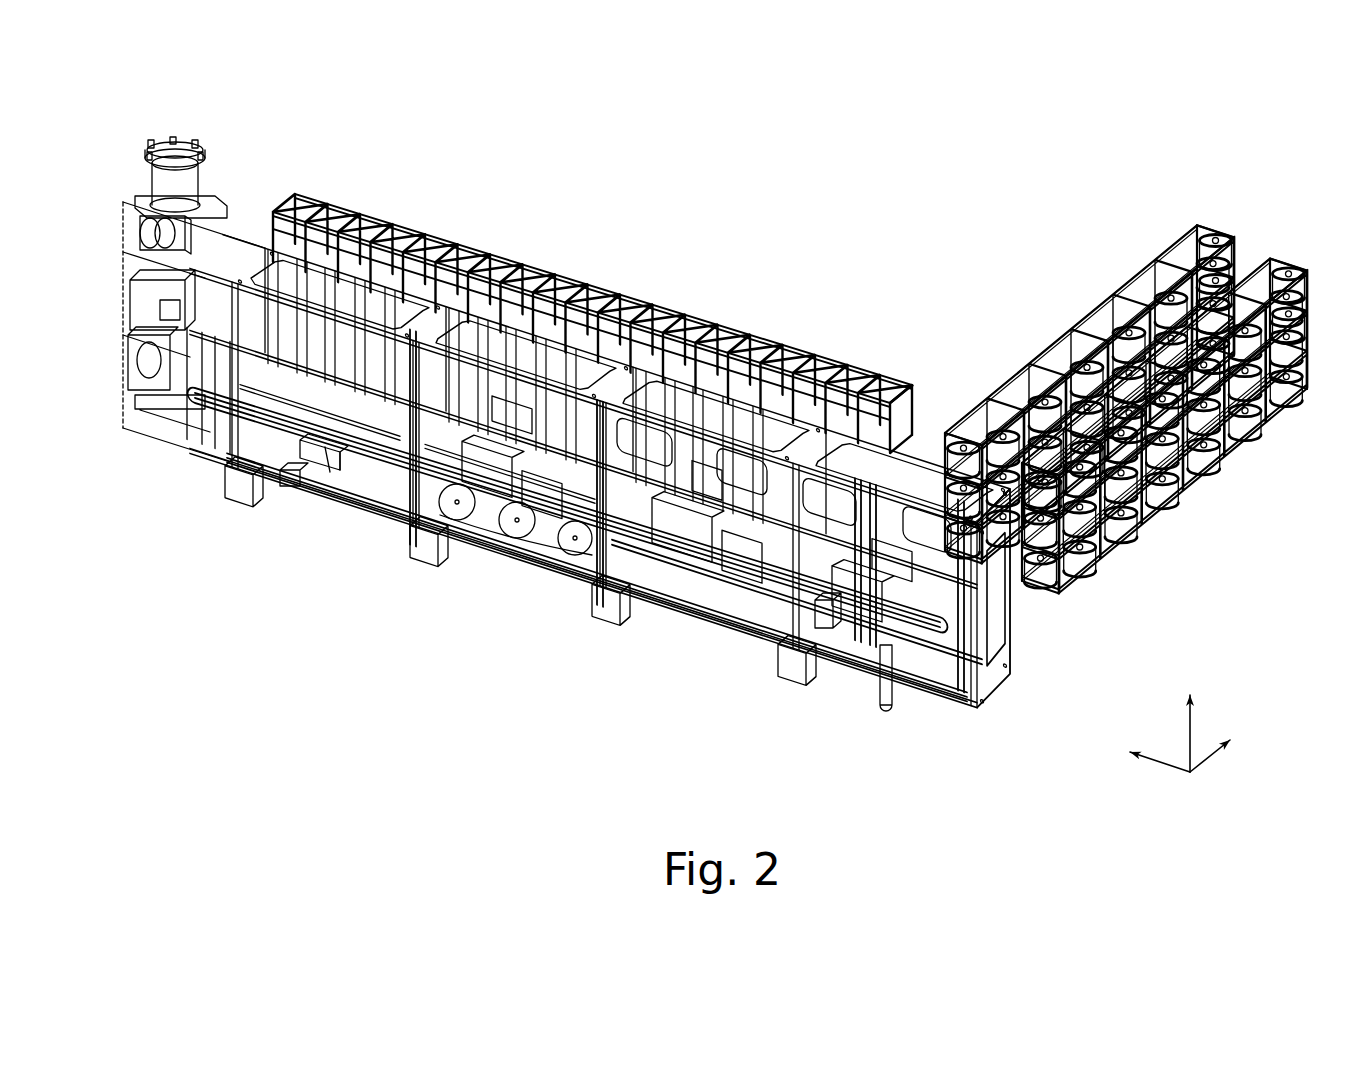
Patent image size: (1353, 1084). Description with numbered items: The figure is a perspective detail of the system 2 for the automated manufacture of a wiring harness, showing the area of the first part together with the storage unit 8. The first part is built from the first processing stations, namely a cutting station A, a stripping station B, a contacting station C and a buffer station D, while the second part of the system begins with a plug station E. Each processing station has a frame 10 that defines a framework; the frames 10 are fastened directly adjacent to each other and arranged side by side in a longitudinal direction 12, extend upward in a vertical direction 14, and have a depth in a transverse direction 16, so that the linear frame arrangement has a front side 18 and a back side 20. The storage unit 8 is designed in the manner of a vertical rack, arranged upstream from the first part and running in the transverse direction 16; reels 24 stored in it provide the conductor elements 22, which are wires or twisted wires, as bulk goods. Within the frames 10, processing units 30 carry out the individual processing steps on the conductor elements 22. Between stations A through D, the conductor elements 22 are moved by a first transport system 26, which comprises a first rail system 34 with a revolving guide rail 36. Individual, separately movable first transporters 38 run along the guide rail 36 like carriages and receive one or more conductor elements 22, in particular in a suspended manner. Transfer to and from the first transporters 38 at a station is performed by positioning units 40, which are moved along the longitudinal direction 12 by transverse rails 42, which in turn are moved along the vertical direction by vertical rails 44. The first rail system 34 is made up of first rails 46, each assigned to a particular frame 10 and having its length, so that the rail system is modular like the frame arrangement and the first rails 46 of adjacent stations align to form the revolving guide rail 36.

The system 2 is at (1052, 185).
The storage unit 8 is at (1126, 425).
The frame 10 is at (990, 693).
The longitudinal direction 12 is at (1162, 765).
The vertical direction 14 is at (1193, 730).
The transverse direction 16 is at (1210, 760).
The front side 18 is at (585, 590).
The back side 20 is at (745, 300).
The conductor elements 22 is at (690, 595).
The reels 24 is at (1070, 563).
The first transport system 26 is at (590, 572).
The processing units 30 is at (403, 520).
The first rail system 34 is at (335, 452).
The guide rail 36 is at (286, 509).
The first transporters 38 is at (290, 480).
The positioning units 40 is at (660, 600).
The transverse rails 42 is at (846, 617).
The vertical rails 44 is at (605, 405).
The first rails 46 is at (490, 520).
The cutting station A is at (830, 755).
The stripping station B is at (668, 698).
The contacting station C is at (470, 635).
The buffer station D is at (300, 568).
The plug station E is at (140, 500).